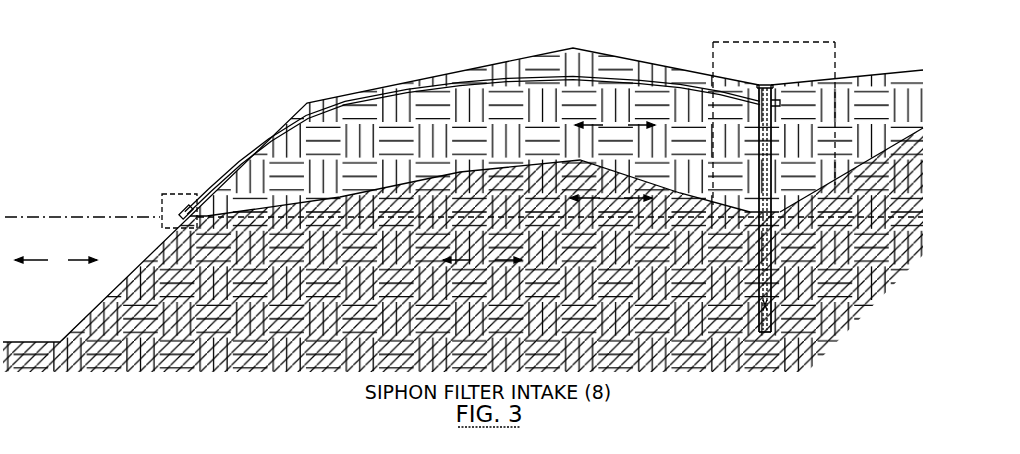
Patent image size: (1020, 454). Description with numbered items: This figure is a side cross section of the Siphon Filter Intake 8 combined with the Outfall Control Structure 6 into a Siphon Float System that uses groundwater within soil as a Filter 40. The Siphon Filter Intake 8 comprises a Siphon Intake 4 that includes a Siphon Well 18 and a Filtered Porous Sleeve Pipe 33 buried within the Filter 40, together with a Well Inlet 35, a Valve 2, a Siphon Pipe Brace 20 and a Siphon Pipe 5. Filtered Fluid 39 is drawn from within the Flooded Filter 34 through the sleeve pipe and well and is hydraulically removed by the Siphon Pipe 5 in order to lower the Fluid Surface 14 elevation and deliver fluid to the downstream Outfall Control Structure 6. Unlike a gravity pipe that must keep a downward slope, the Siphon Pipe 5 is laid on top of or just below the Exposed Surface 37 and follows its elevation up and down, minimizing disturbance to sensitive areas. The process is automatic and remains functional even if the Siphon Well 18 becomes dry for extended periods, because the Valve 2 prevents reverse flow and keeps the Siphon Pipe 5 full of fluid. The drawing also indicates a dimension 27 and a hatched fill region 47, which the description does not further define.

The valve 2 is at (771, 311).
The siphon intake 4 is at (774, 326).
The siphon pipe 5 is at (490, 72).
The outfall control structure 6 is at (181, 189).
The siphon filter intake 8 is at (839, 38).
The fluid surface 14 is at (57, 212).
The siphon well 18 is at (779, 135).
The siphon pipe brace 20 is at (791, 102).
The setback distance 27 is at (56, 260).
The filtered porous sleeve pipe 33 is at (777, 155).
The flooded filter 34 is at (611, 198).
The well inlet 35 is at (769, 83).
The exposed surface 37 is at (366, 83).
The filtered fluid 39 is at (482, 260).
The filter 40 is at (615, 125).
The fill material 47 is at (527, 208).